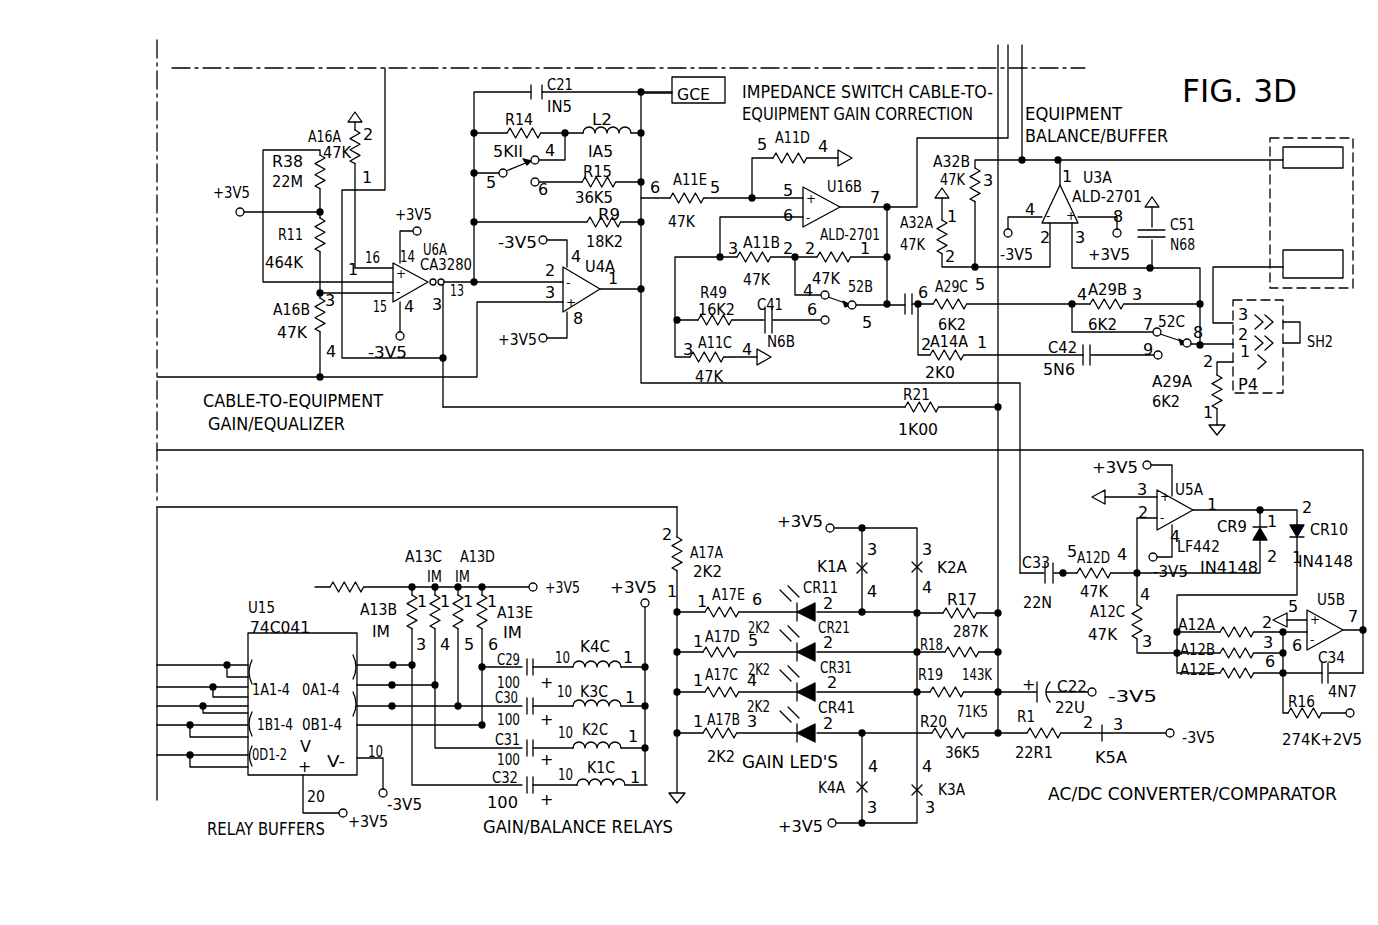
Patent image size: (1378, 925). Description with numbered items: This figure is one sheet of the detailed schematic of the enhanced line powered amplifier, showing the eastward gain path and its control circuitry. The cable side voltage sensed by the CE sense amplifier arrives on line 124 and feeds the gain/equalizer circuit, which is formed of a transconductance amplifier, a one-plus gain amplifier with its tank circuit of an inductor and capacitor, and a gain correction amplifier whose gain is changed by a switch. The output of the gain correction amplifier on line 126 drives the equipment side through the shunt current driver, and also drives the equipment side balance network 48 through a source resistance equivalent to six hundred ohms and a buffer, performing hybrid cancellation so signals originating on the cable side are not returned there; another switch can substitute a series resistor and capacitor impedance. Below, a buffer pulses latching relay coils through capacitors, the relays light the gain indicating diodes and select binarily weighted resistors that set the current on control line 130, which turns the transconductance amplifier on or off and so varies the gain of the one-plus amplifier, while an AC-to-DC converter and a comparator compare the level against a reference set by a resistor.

The line 124 is at (270, 377).
The line 126 is at (924, 126).
The control line 130 is at (497, 408).
The equipment side balance network 48 is at (1308, 138).